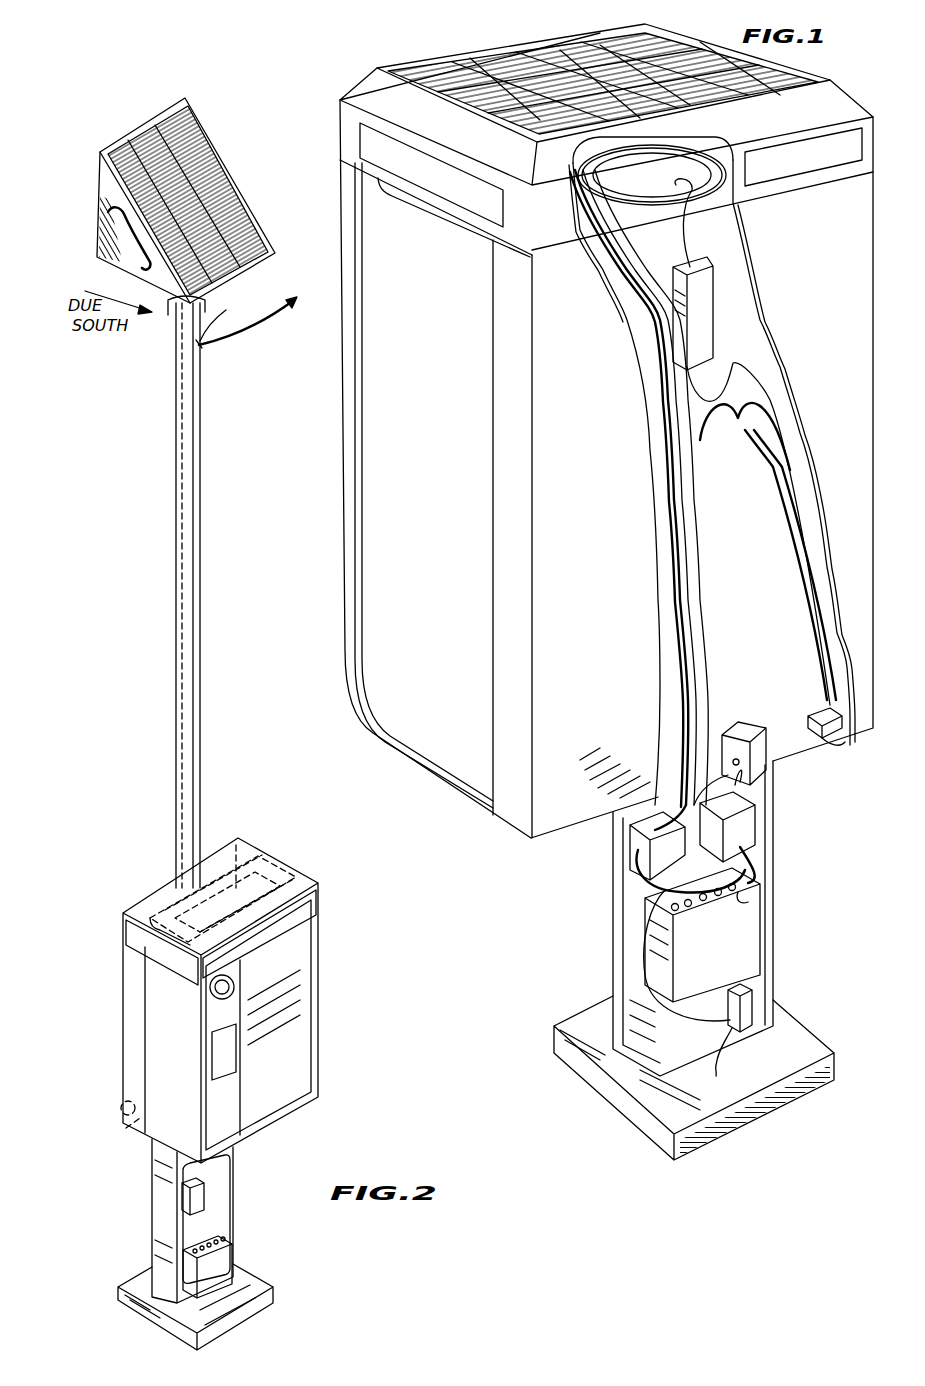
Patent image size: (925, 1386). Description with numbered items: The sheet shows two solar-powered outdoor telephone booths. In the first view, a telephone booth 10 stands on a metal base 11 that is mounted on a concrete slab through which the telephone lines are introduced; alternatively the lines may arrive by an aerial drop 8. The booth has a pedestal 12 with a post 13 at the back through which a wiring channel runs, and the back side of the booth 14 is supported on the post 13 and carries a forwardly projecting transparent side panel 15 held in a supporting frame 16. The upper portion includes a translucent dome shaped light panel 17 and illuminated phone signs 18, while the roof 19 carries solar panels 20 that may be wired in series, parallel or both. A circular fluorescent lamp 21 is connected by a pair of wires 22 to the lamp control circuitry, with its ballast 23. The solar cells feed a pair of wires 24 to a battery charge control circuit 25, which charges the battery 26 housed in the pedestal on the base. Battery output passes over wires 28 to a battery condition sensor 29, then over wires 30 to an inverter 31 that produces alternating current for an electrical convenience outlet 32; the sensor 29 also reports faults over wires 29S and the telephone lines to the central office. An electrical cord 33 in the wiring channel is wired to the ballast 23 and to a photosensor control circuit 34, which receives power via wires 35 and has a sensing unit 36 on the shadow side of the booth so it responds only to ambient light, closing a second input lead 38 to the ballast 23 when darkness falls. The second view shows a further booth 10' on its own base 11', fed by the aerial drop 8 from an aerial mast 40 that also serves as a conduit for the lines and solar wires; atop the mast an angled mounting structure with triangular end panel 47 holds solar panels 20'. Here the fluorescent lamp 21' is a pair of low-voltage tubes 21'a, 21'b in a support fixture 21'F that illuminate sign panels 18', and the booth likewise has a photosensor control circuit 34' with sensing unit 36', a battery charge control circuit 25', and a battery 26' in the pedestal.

In FIG. 1, the telephone booth 10 is at (586, 469).
In FIG. 1, the metal base 11 is at (703, 1078).
In FIG. 1, the pedestal 12 is at (613, 972).
In FIG. 1, the post 13 is at (660, 688).
In FIG. 1, the back side of the booth 14 is at (604, 564).
In FIG. 1, the transparent side panel 15 is at (419, 490).
In FIG. 1, the supporting frame 16 is at (350, 572).
In FIG. 1, the translucent dome shaped light panel 17 is at (425, 232).
In FIG. 1, the illuminated phone signs 18 is at (431, 199).
In FIG. 1, the roof 19 is at (372, 86).
In FIG. 1, the solar panels 20 is at (603, 78).
In FIG. 1, the fluorescent lamp 21 is at (674, 156).
In FIG. 1, the pair of wires 22 is at (690, 228).
In FIG. 1, the ballast 23 is at (713, 300).
In FIG. 1, the pair of wires 24 is at (627, 257).
In FIG. 1, the battery charge control circuit 25 is at (625, 842).
In FIG. 1, the battery 26 is at (731, 935).
In FIG. 1, the pair of wires 28 is at (745, 898).
In FIG. 1, the battery condition sensor 29 is at (752, 1000).
In FIG. 2, the battery condition sensor 29 is at (180, 430).
In FIG. 1, the wires 29S is at (714, 1038).
In FIG. 1, the pair of wires 30 is at (740, 850).
In FIG. 1, the inverter 31 is at (758, 812).
In FIG. 1, the electrical convenience outlet 32 is at (752, 765).
In FIG. 1, the electrical cord 33 is at (705, 505).
In FIG. 1, the photosensor control circuit 34 is at (808, 712).
In FIG. 1, the wires 35 is at (772, 430).
In FIG. 1, the sensing unit 36 is at (840, 752).
In FIG. 1, the second input lead 38 is at (765, 395).
In FIG. 2, the solar panels 20' is at (187, 194).
In FIG. 2, the triangularly shaped end panel 47 is at (102, 187).
In FIG. 2, the aerial drop 8 is at (242, 330).
In FIG. 2, the aerial mast 40 is at (198, 560).
In FIG. 2, the telephone booth 10' is at (264, 1000).
In FIG. 2, the sign panels 18' is at (213, 937).
In FIG. 2, the fluorescent lamp 21' is at (250, 886).
In FIG. 2, the fluorescent tube 21'a is at (266, 893).
In FIG. 2, the fluorescent tube 21'b is at (265, 846).
In FIG. 2, the support fixture 21'F is at (188, 900).
In FIG. 2, the photosensor control circuit 34' is at (105, 1092).
In FIG. 2, the sensing unit 36' is at (103, 1131).
In FIG. 2, the battery charge control circuit 25' is at (148, 1207).
In FIG. 2, the battery 26' is at (233, 1262).
In FIG. 2, the metal base 11' is at (216, 1307).